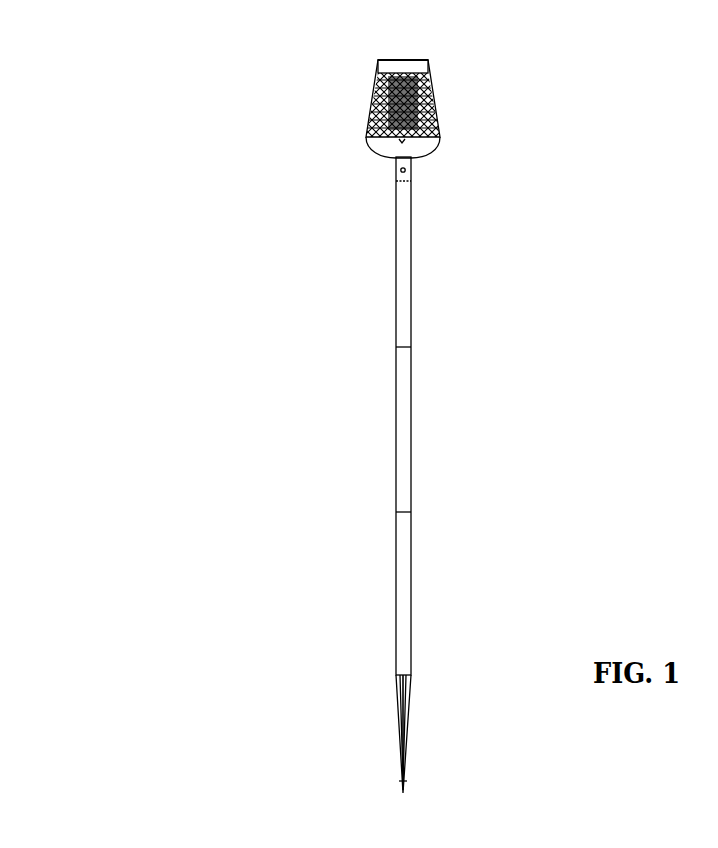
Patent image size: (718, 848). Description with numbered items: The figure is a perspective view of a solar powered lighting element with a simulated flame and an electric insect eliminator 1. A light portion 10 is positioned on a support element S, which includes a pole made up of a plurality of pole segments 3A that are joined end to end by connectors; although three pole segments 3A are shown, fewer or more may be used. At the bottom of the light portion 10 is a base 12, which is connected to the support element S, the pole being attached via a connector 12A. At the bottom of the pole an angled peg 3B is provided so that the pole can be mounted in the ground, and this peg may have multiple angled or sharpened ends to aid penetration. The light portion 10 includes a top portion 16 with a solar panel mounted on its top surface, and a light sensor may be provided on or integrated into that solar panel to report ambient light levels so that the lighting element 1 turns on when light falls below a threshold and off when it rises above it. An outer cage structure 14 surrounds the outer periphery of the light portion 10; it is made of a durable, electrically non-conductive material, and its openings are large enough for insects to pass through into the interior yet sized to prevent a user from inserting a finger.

The solar powered lighting element with a simulated flame and an electric insect eli 1 is at (270, 282).
The light portion 10 is at (332, 121).
The top portion 16 is at (425, 68).
The outer cage structure 14 is at (432, 103).
The base 12 is at (420, 152).
The connector 12A is at (413, 170).
The pole segments 3A is at (403, 562).
The angled peg 3B is at (389, 717).
The support element S is at (338, 421).